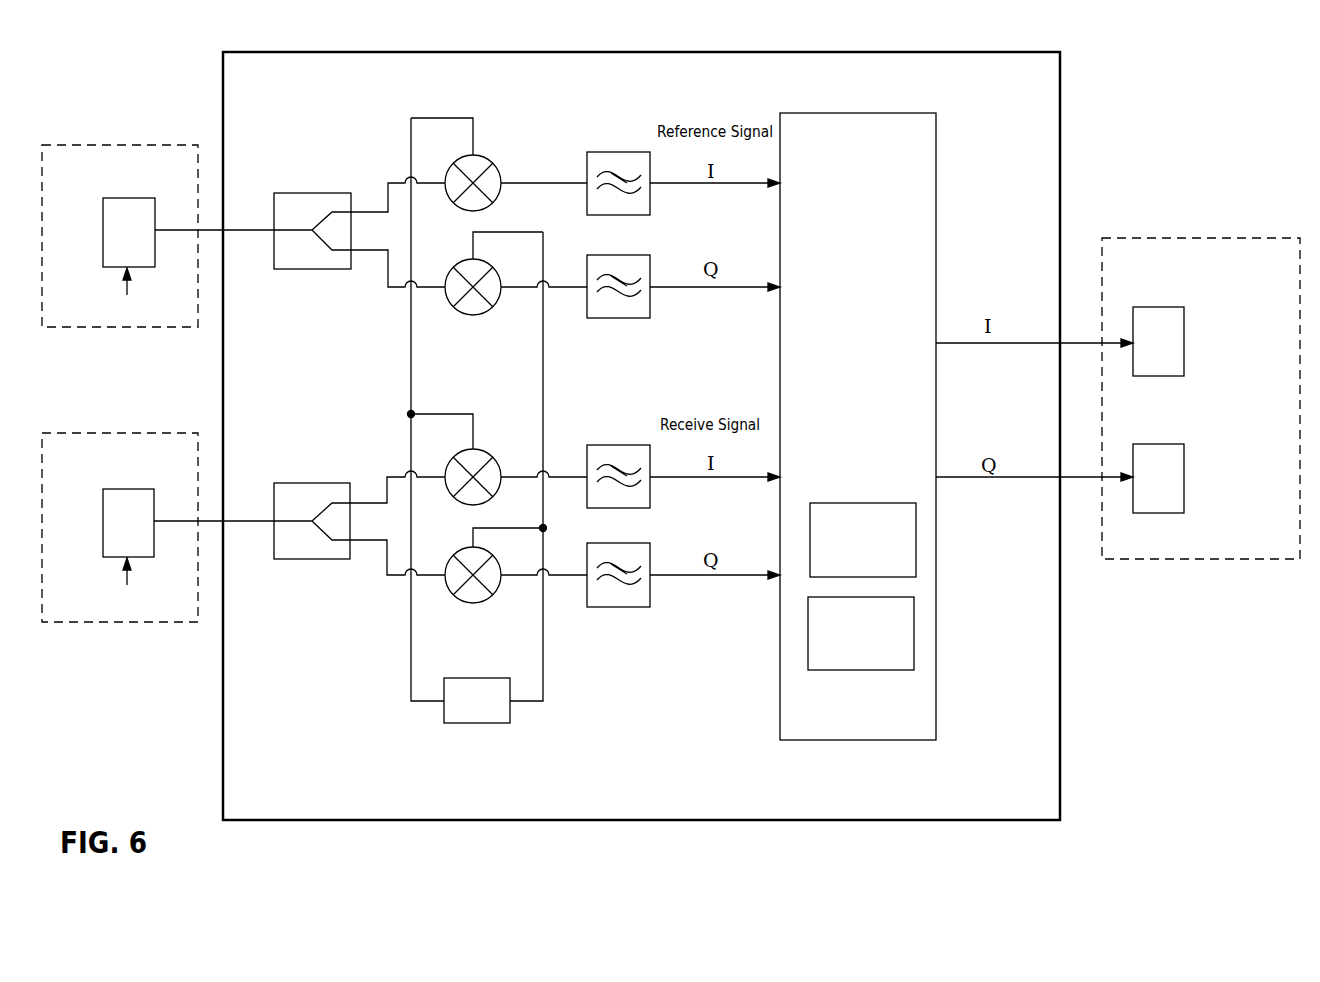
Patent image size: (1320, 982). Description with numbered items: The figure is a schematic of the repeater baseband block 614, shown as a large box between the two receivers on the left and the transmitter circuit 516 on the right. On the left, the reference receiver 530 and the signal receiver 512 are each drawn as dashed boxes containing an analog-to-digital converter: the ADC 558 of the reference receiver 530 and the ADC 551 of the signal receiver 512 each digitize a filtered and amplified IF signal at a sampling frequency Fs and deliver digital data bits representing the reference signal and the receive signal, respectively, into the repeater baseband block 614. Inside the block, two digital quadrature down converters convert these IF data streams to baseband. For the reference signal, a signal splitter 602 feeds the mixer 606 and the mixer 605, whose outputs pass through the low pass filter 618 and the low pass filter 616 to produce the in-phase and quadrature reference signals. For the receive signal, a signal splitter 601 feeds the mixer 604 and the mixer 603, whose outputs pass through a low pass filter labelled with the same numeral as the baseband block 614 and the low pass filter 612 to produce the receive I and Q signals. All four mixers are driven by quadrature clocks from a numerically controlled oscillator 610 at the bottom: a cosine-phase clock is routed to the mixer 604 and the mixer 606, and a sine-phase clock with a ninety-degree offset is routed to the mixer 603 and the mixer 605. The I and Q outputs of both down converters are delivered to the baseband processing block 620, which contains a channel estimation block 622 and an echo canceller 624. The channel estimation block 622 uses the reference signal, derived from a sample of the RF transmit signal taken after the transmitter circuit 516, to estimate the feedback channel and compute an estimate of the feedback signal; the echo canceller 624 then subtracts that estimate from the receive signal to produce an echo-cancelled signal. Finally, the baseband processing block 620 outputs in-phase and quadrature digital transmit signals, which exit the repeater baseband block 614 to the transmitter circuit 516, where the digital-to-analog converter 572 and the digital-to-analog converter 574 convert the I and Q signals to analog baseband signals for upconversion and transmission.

The repeater baseband block 614 is at (941, 83).
The reference receiver 530 is at (89, 316).
The analog-to-digital converter 558 is at (127, 197).
The signal splitter 602 is at (309, 271).
The mixer 606 is at (452, 203).
The mixer 605 is at (460, 312).
The low pass filter 618 is at (625, 151).
The low pass filter 616 is at (621, 319).
The receiver circuit 512 is at (89, 611).
The analog-to-digital converter 551 is at (127, 488).
The signal splitter 601 is at (306, 560).
The mixer 604 is at (452, 497).
The mixer 603 is at (458, 600).
The low pass filter 612 is at (621, 608).
The numerically controlled oscillator 610 is at (476, 724).
The baseband processing block 620 is at (869, 726).
The channel estimation block 622 is at (916, 537).
The echo canceller 624 is at (914, 620).
The transmitter circuit 516 is at (1257, 552).
The digital-to-analog converter 572 is at (1160, 306).
The digital-to-analog converter 574 is at (1160, 443).